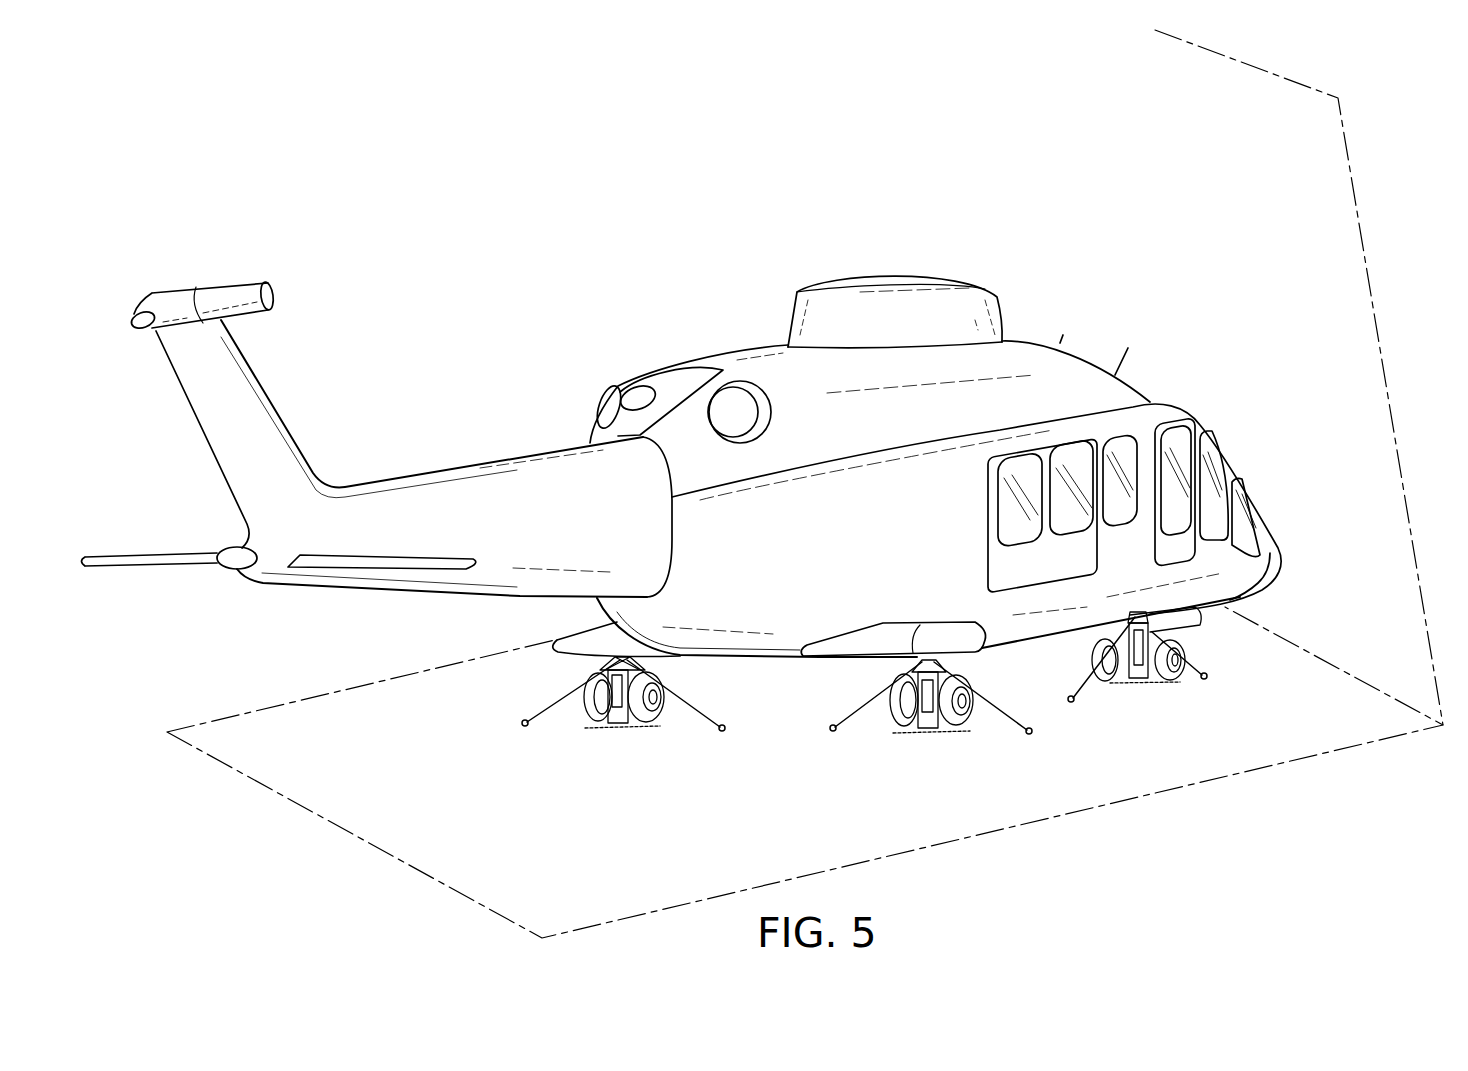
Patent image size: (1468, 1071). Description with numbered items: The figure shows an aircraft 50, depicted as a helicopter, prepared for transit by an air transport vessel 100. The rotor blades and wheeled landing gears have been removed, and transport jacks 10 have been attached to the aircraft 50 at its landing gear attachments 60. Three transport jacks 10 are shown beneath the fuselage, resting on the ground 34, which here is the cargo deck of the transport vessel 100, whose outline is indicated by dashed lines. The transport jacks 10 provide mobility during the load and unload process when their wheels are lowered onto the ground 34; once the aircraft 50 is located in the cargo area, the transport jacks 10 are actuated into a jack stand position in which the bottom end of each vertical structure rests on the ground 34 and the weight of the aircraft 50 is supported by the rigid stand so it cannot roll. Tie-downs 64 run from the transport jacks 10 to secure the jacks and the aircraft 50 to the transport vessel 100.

The transport jack 10 is at (603, 752).
The ground 34 is at (376, 827).
The aircraft 50 is at (682, 517).
The landing gear attachment 60 is at (572, 654).
The tie-down 64 is at (878, 692).
The transport vessel 100 is at (1378, 322).